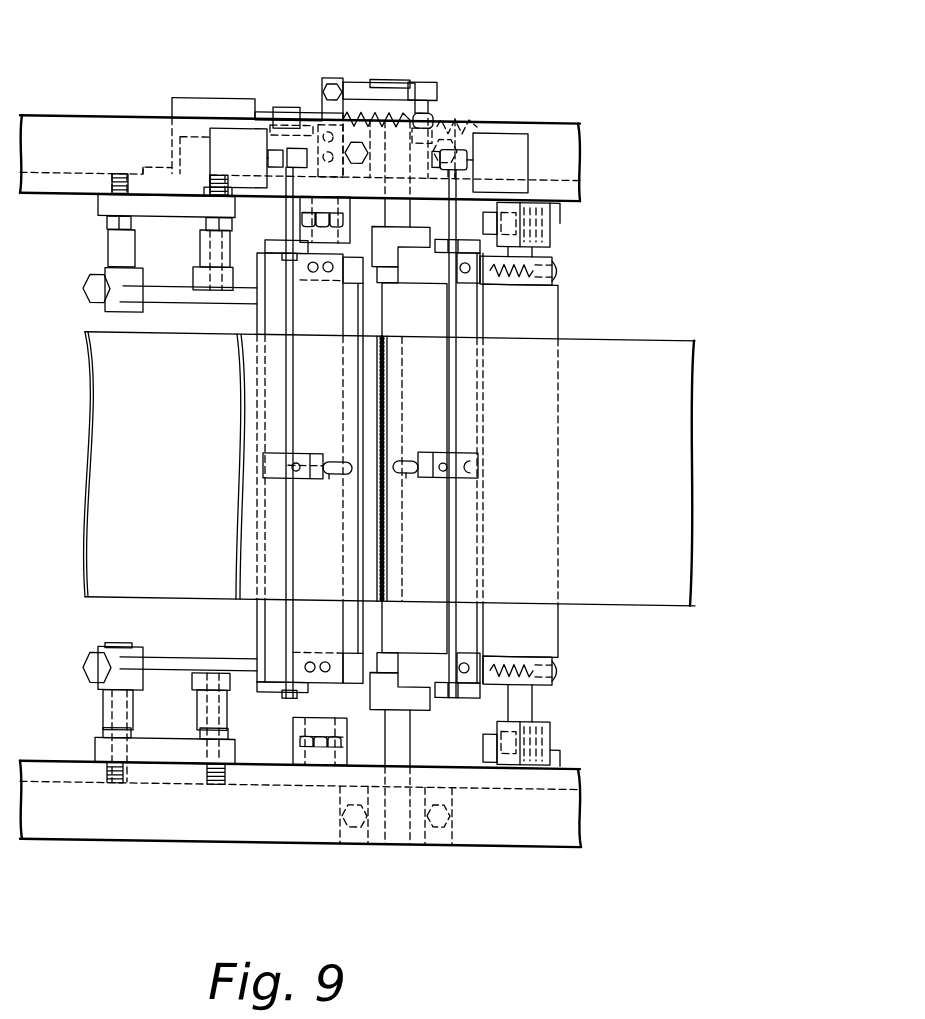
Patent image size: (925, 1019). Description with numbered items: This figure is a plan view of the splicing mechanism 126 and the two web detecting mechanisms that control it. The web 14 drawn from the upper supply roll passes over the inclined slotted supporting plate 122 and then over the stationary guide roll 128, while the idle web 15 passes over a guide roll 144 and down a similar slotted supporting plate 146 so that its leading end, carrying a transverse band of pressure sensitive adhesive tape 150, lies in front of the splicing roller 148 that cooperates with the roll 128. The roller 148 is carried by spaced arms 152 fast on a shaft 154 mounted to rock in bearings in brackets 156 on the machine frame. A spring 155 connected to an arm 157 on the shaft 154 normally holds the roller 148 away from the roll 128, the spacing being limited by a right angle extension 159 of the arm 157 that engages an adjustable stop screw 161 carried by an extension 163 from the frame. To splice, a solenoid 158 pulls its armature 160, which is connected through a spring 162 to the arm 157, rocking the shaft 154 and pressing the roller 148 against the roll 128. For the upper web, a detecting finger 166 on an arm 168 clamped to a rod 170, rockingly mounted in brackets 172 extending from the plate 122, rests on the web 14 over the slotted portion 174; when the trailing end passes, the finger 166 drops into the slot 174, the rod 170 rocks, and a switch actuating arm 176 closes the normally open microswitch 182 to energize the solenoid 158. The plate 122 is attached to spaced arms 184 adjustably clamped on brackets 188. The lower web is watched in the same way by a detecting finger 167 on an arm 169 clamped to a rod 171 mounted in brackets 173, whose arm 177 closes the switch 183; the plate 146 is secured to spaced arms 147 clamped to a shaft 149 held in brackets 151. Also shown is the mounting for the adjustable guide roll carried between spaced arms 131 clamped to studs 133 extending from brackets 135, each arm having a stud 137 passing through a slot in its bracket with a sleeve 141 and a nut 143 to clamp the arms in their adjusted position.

The web 14 is at (87, 371).
The idle web 15 is at (590, 333).
The slotted supporting plate 122 is at (260, 631).
The splicing mechanism 126 is at (350, 688).
The guide roll 128 is at (358, 295).
The spaced arms 131 is at (192, 300).
The studs 133 is at (108, 248).
The brackets 135 is at (178, 209).
The stud 137 is at (207, 684).
The sleeve 141 is at (227, 714).
The nut 143 is at (200, 767).
The guide roll 144 is at (557, 622).
The slotted supporting plate 146 is at (477, 616).
The spaced arms 147 is at (560, 260).
The splicing roller 148 is at (382, 314).
The shaft 149 is at (532, 697).
The pressure sensitive adhesive tape 150 is at (382, 559).
The brackets 151 is at (550, 225).
The spaced arms 152 is at (410, 241).
The shaft 154 is at (392, 209).
The spring 155 is at (452, 143).
The brackets 156 is at (455, 820).
The arm 157 is at (435, 76).
The solenoid 158 is at (200, 97).
The right angle extension 159 is at (358, 78).
The armature 160 is at (253, 104).
The adjustable stop screw 161 is at (332, 78).
The spring 162 is at (395, 117).
The extension 163 is at (320, 73).
The detecting finger 166 is at (335, 453).
The detecting finger 167 is at (410, 454).
The arm 168 is at (265, 453).
The arm 169 is at (463, 446).
The rod 170 is at (300, 353).
The rod 171 is at (450, 363).
The brackets 172 is at (280, 236).
The brackets 173 is at (463, 236).
The slotted portion 174 is at (333, 477).
The switch actuating arm 176 is at (287, 144).
The arm 177 is at (463, 150).
The microswitch 182 is at (236, 162).
The switch 183 is at (500, 163).
The spaced arms 184 is at (353, 277).
The brackets 188 is at (300, 206).